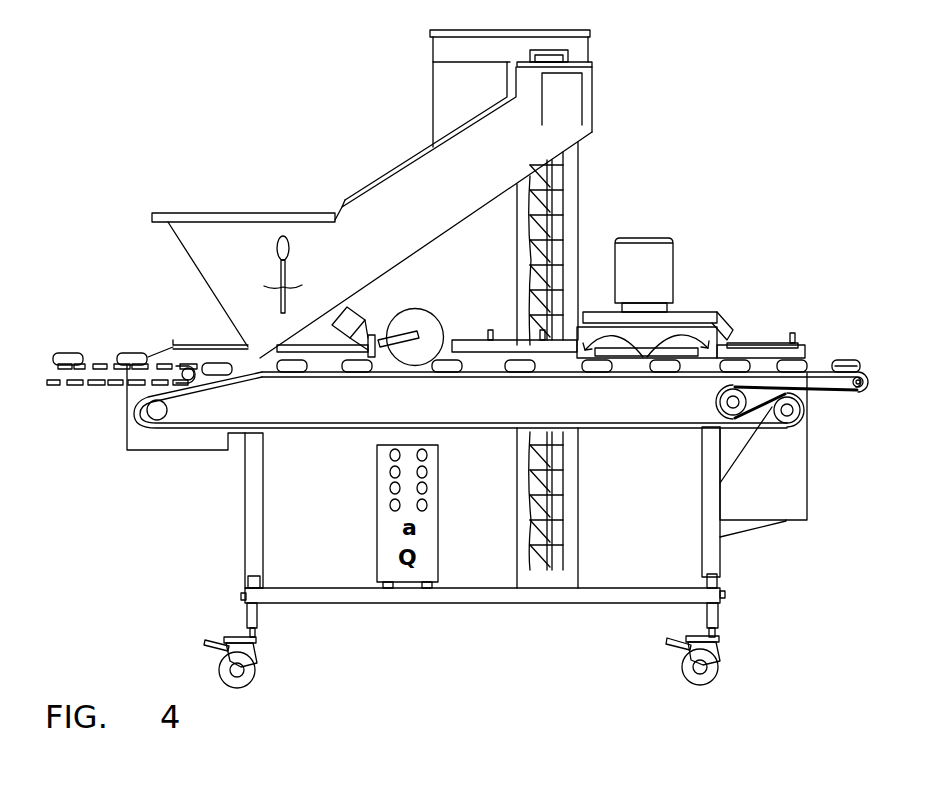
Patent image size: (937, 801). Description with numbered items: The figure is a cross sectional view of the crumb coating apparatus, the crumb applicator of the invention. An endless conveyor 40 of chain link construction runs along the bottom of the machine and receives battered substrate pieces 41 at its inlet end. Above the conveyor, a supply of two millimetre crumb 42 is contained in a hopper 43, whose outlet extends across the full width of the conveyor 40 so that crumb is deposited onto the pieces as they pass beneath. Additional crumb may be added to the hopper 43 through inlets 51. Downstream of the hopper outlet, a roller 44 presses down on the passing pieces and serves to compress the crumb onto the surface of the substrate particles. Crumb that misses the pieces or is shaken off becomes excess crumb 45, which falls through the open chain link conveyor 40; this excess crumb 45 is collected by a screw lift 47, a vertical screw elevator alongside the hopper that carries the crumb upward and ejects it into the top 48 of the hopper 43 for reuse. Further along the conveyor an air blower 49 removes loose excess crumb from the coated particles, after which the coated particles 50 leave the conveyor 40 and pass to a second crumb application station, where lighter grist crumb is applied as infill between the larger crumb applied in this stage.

The endless conveyor 40 is at (250, 373).
The battered substrate pieces 41 is at (134, 350).
The 2 mm crumb 42 is at (373, 250).
The hopper 43 is at (448, 232).
The roller 44 is at (443, 316).
The excess crumb 45 is at (343, 378).
The screw lift 47 is at (560, 475).
The top of the hopper 48 is at (563, 97).
The air blower 49 is at (693, 311).
The coated particles 50 is at (848, 360).
The inlets 51 is at (226, 238).